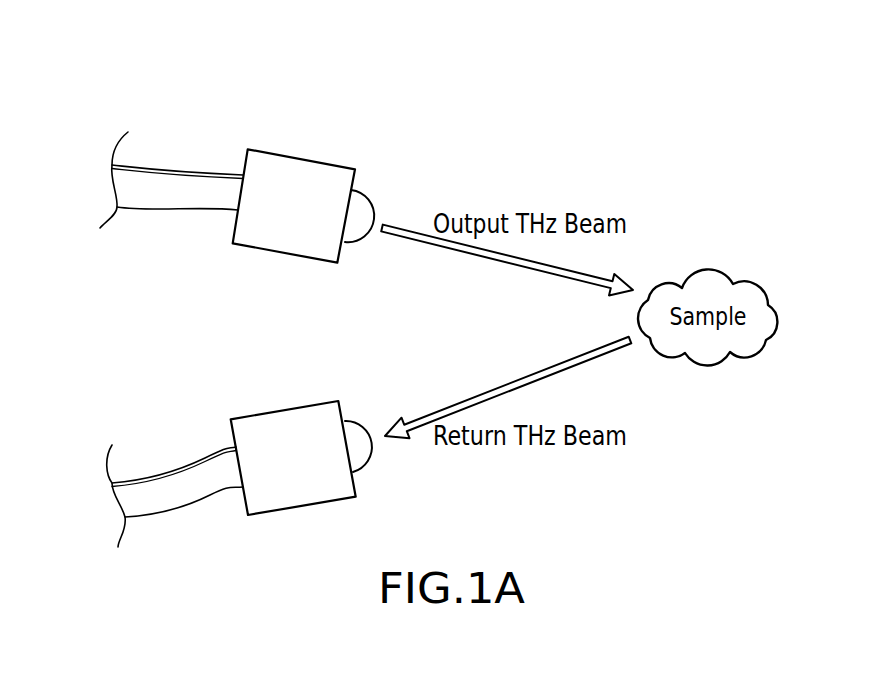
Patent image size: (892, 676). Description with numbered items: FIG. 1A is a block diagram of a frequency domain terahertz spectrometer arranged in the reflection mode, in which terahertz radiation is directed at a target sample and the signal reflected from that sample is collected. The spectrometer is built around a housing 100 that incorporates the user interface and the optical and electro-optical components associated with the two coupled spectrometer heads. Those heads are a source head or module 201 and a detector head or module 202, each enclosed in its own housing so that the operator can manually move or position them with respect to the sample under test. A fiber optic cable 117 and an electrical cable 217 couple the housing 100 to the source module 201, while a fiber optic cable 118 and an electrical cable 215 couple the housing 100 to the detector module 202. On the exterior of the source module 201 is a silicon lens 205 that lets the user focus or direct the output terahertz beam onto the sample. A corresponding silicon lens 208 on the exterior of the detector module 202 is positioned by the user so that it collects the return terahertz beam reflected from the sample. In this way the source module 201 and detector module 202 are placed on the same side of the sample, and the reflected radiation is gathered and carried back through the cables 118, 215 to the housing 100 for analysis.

The housing 100 is at (72, 108).
The fiber optic cable 117 is at (183, 168).
The electrical cable 217 is at (178, 211).
The source head or module 201 is at (295, 152).
The silicon lens 205 is at (367, 192).
The detector head or module 202 is at (277, 408).
The silicon lens 208 is at (363, 420).
The fiber optic cable 118 is at (172, 466).
The electrical cable 215 is at (185, 500).